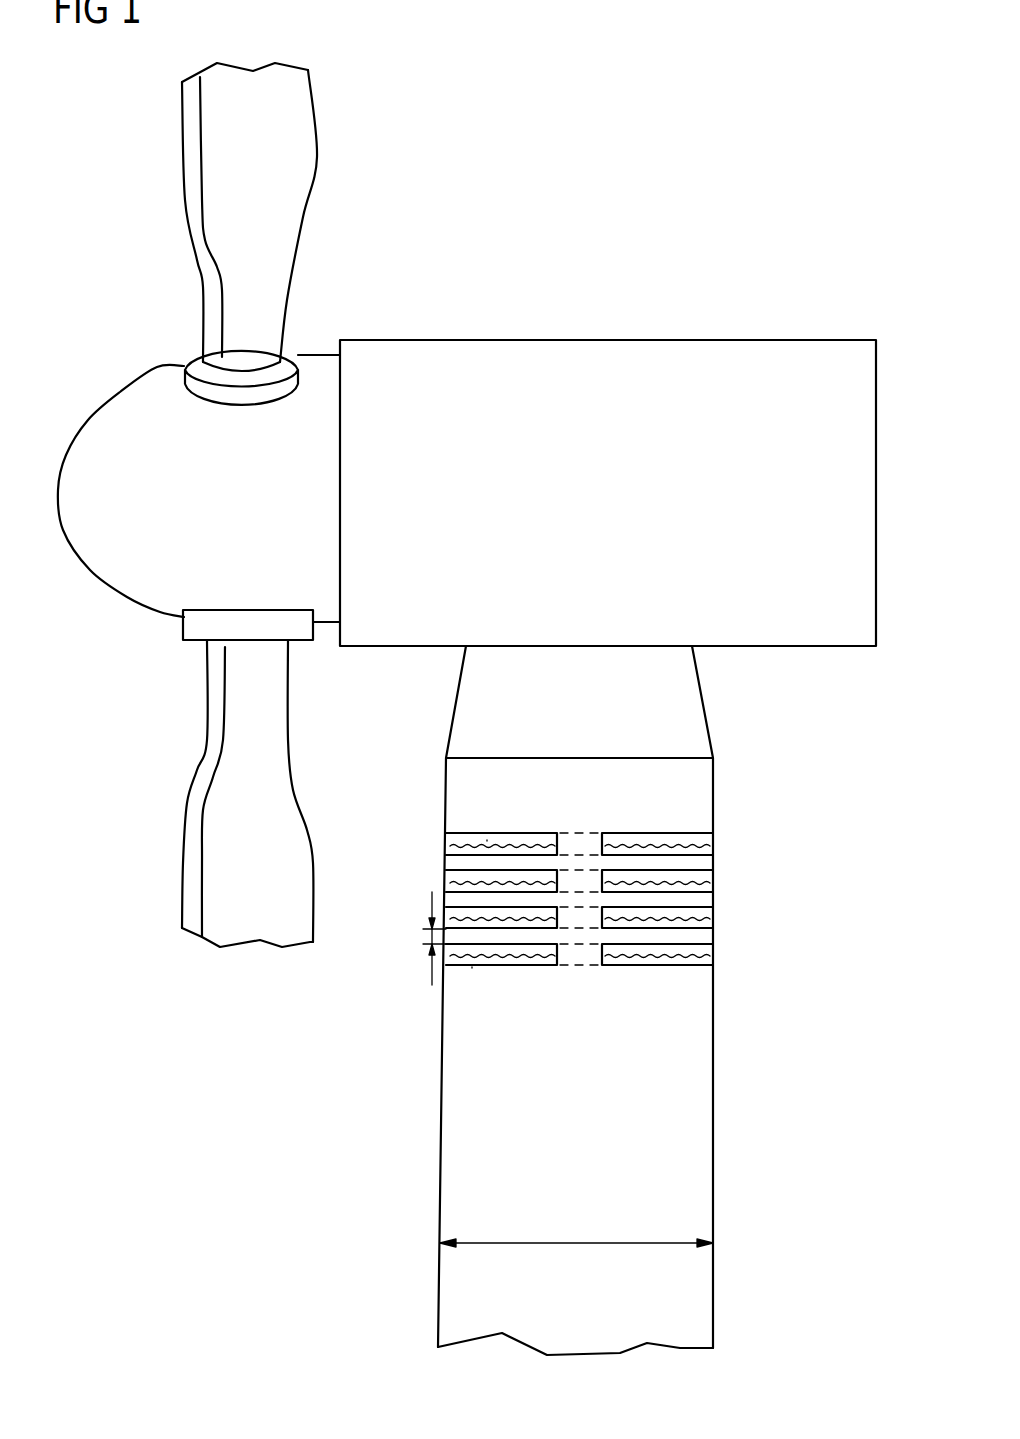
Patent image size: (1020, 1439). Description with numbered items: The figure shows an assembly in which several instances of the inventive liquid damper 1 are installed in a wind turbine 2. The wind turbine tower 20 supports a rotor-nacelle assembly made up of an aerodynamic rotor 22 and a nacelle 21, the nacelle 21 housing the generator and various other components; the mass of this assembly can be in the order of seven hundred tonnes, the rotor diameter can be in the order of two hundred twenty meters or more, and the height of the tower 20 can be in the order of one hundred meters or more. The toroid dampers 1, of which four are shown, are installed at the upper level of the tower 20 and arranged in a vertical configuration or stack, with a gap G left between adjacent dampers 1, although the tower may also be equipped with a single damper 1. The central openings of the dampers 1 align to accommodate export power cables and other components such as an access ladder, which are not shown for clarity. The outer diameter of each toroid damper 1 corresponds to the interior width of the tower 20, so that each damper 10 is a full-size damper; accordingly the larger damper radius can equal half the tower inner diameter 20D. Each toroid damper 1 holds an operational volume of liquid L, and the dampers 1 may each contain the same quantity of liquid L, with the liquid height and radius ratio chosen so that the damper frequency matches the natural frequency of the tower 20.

The liquid damper 1 is at (639, 1039).
The wind turbine 2 is at (702, 150).
The damper 10 is at (706, 841).
The wind turbine tower 20 is at (713, 1095).
The tower inner diameter 20D is at (577, 1243).
The nacelle 21 is at (597, 349).
The aerodynamic rotor 22 is at (111, 718).
The gap G is at (425, 935).
The liquid L is at (542, 878).